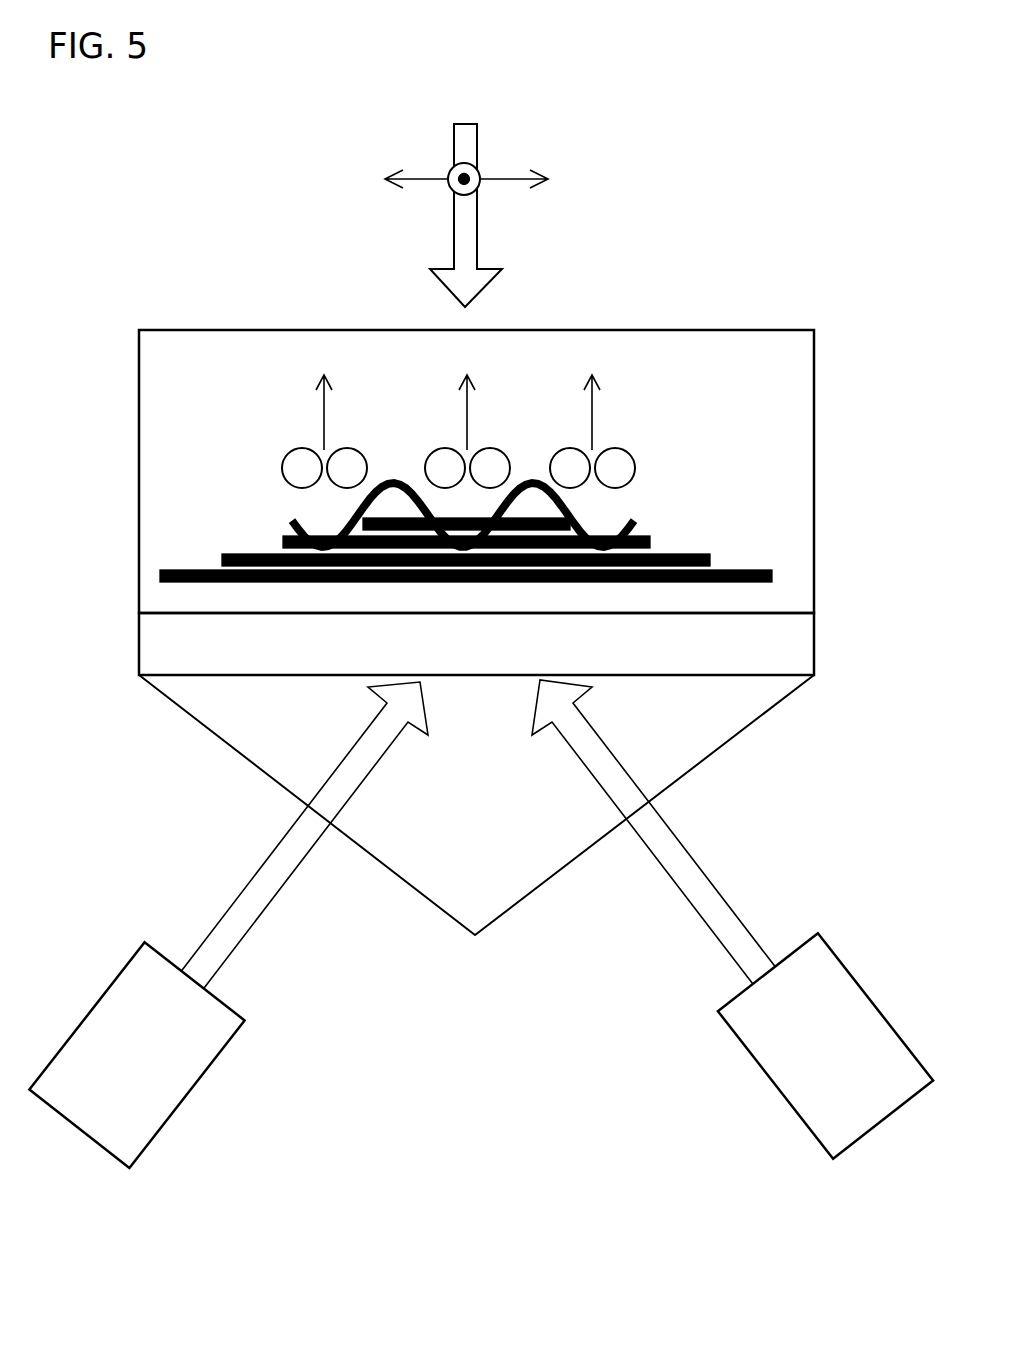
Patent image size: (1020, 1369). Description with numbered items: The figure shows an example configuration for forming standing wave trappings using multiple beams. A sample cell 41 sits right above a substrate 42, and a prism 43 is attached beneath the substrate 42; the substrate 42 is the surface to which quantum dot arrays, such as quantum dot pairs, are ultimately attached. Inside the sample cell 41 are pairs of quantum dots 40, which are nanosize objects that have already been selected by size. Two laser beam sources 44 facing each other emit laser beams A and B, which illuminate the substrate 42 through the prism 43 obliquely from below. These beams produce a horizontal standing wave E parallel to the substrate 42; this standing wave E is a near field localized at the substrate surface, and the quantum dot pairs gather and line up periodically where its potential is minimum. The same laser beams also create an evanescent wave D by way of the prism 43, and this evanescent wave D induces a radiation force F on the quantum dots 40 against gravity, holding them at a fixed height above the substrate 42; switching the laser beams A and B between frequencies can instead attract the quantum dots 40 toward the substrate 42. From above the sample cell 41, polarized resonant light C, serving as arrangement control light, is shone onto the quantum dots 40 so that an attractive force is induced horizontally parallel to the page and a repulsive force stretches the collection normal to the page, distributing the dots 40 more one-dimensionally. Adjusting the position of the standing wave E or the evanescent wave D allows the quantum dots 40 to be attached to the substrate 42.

The quantum dots 40 is at (463, 431).
The sample cell 41 is at (814, 483).
The substrate 42 is at (814, 643).
The prism 43 is at (718, 748).
The laser beam sources 44 is at (106, 988).
The laser beam A is at (304, 835).
The laser beam B is at (653, 832).
The resonant light (arrangement control light) C is at (466, 215).
The evanescent wave D is at (695, 552).
The standing wave E is at (578, 512).
The radiation force F is at (320, 418).